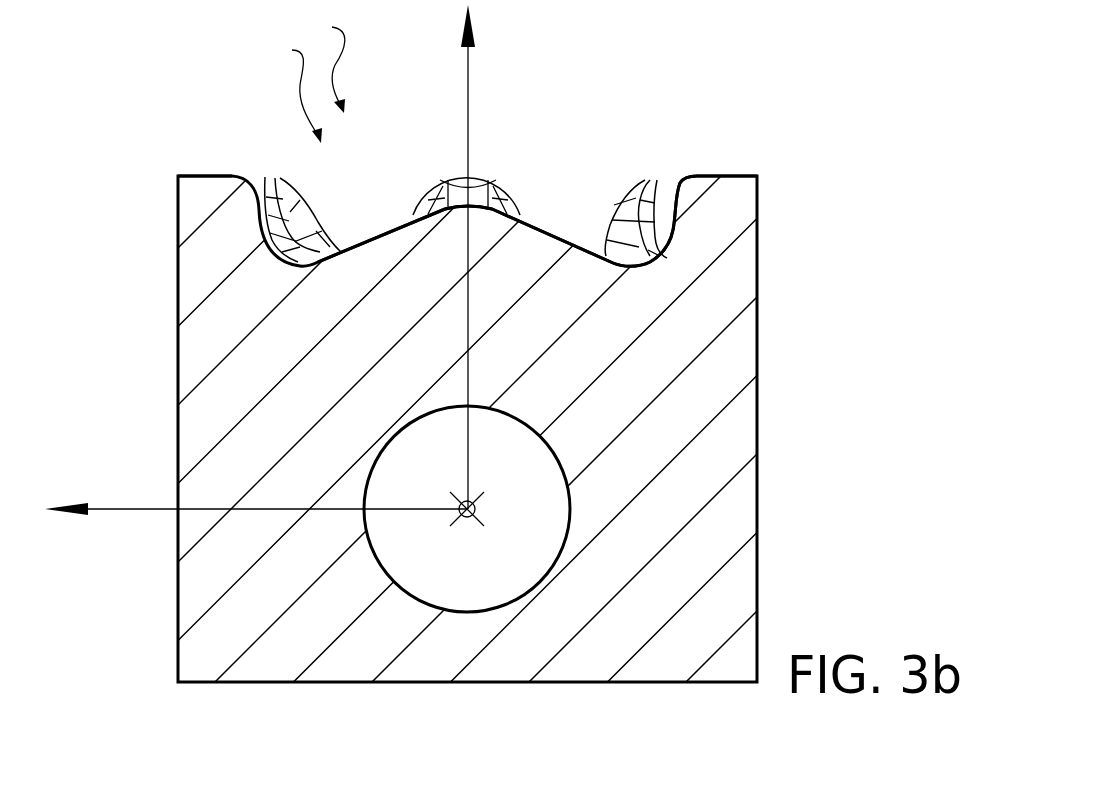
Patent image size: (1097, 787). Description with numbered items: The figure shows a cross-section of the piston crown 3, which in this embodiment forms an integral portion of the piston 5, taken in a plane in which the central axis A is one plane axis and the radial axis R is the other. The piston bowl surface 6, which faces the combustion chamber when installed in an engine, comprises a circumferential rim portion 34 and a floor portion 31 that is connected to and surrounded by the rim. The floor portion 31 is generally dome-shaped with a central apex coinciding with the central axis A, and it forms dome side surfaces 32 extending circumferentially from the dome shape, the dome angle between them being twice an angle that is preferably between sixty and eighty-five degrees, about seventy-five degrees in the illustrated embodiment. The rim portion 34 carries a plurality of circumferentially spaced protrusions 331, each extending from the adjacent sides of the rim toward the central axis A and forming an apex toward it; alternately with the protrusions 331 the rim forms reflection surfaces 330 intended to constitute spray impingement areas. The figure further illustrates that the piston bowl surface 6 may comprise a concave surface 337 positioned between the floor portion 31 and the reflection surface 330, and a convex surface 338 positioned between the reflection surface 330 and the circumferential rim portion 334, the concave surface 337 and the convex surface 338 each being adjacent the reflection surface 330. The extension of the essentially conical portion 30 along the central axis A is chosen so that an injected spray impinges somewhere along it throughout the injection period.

The piston crown 3 is at (713, 296).
The piston 5 is at (668, 508).
The piston bowl surface 6 is at (298, 90).
The essentially conical portion 30 is at (322, 63).
The floor portion 31 is at (486, 183).
The dome side surfaces 32 is at (537, 222).
The circumferential rim portion 34 is at (200, 176).
The reflection surface 330 is at (678, 232).
The protrusion 331 is at (298, 232).
The circumferential rim portion 334 is at (738, 176).
The concave surface 337 is at (672, 262).
The convex surface 338 is at (678, 183).
The central axis A is at (468, 82).
The radial axis R is at (112, 508).